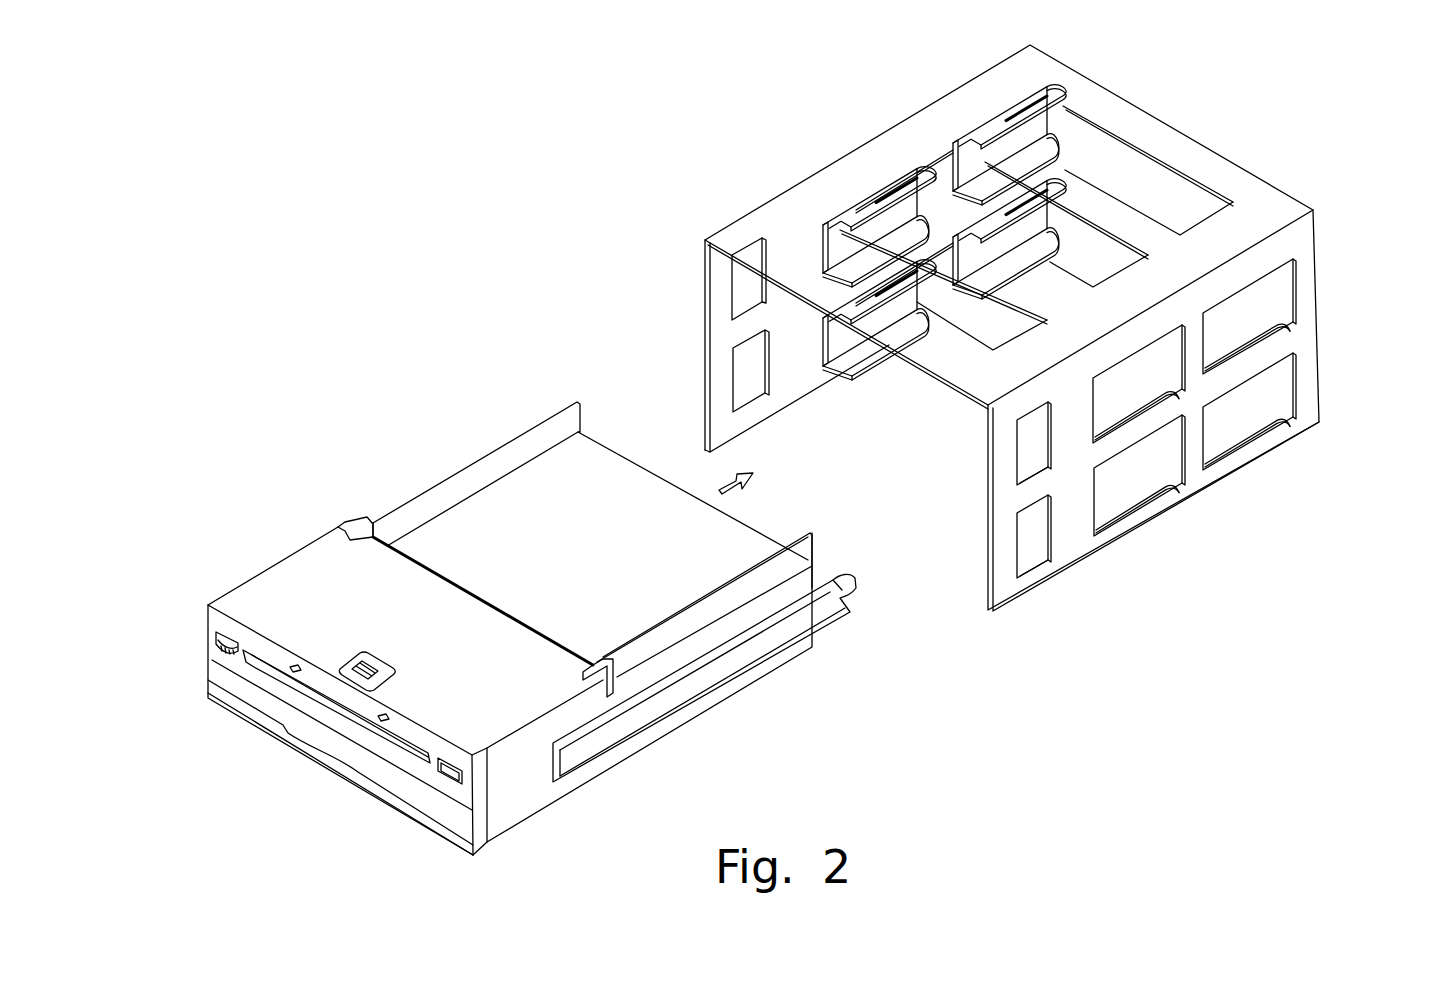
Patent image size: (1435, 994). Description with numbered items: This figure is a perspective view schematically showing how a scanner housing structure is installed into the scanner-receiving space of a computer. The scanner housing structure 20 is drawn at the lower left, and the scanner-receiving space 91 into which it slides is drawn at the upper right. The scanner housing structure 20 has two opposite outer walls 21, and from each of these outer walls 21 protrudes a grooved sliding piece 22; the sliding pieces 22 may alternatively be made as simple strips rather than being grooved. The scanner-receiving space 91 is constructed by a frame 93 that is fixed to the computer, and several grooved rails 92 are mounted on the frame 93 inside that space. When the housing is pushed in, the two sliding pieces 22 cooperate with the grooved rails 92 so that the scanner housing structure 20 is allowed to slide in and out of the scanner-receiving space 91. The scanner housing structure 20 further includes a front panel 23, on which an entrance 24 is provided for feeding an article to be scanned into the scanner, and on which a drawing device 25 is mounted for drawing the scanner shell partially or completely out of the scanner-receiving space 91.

The scanner housing structure 20 is at (612, 483).
The outer walls 21 is at (520, 782).
The grooved sliding pieces 22 is at (855, 598).
The front panel 23 is at (225, 623).
The entrance 24 is at (277, 677).
The drawing device 25 is at (415, 785).
The scanner-receiving space 91 is at (923, 373).
The grooved rails 92 is at (878, 195).
The frame 93 is at (1267, 208).